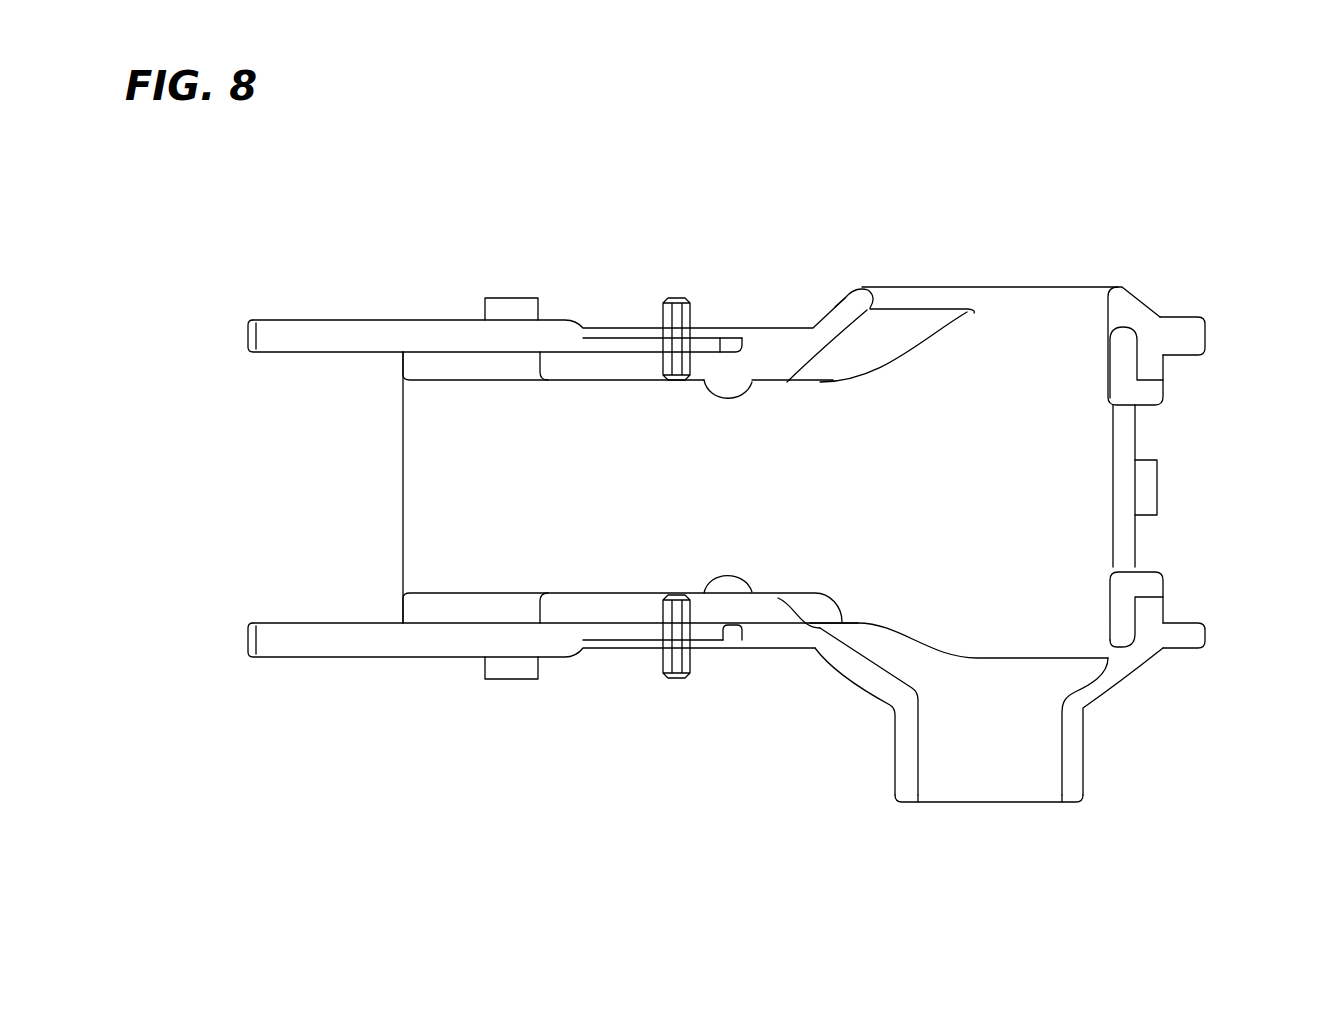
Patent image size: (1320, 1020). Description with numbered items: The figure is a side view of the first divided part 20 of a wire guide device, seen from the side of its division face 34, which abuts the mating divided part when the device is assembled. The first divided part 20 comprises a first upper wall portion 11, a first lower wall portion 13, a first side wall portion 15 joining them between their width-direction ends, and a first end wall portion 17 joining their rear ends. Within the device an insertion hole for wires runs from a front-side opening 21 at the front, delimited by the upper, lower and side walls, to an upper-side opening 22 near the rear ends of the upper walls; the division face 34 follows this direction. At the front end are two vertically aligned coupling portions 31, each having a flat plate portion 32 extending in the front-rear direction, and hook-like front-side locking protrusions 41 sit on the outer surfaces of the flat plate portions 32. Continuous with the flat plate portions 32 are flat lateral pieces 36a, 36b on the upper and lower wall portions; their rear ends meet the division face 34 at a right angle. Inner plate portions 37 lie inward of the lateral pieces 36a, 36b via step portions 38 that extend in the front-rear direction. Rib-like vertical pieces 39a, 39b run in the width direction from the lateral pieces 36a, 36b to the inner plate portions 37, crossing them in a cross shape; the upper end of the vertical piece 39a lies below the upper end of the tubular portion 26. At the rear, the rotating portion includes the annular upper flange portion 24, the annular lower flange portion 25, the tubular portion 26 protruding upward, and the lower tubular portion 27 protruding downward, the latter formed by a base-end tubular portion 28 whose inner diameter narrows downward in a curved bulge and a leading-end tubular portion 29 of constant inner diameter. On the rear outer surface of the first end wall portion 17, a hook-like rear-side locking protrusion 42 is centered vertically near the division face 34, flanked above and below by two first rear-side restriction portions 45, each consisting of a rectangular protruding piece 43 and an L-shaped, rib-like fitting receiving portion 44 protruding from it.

The first upper wall portion 11 is at (438, 330).
The first lower wall portion 13 is at (438, 650).
The first side wall portion 15 is at (422, 500).
The first end wall portion 17 is at (1087, 538).
The first divided part 20 is at (1028, 287).
The front-side opening 21 is at (403, 604).
The upper-side opening 22 is at (872, 302).
The upper flange portion 24 is at (1207, 336).
The lower flange portion 25 is at (1195, 637).
The tubular portion 26 is at (845, 307).
The lower tubular portion 27 is at (975, 715).
The base-end tubular portion 28 is at (878, 683).
The leading-end tubular portion 29 is at (955, 786).
The coupling portion 31 is at (310, 330).
The flat plate portion 32 is at (566, 326).
The division face 34 is at (376, 330).
The lateral piece 36a is at (712, 342).
The lateral piece 36b is at (715, 635).
The inner plate portion 37 is at (752, 382).
The step portion 38 is at (623, 366).
The vertical piece 39a is at (675, 305).
The vertical piece 39b is at (675, 680).
The front-side locking protrusion 41 is at (510, 305).
The rear-side locking protrusion 42 is at (1150, 487).
The protruding piece 43 is at (1148, 393).
The fitting receiving portion 44 is at (1122, 340).
The first rear-side restriction portion 45 is at (1150, 492).